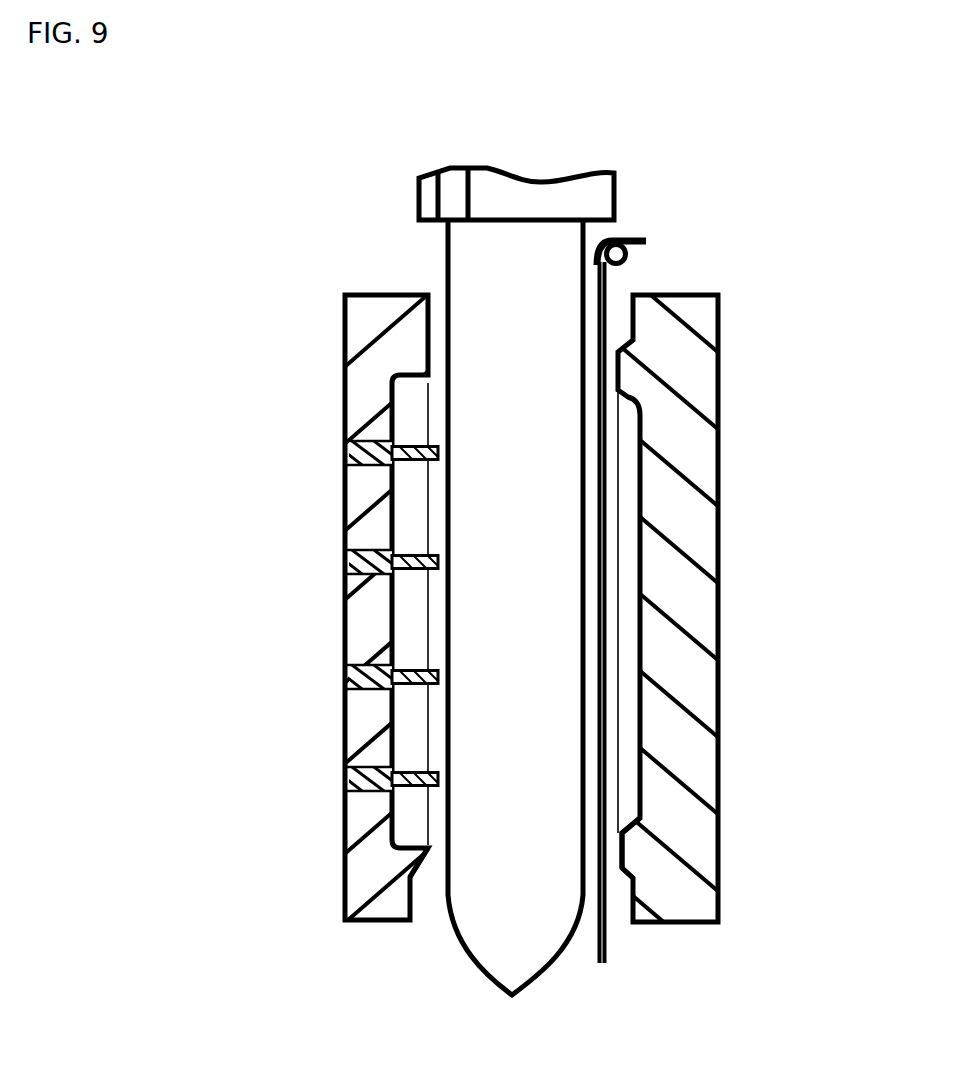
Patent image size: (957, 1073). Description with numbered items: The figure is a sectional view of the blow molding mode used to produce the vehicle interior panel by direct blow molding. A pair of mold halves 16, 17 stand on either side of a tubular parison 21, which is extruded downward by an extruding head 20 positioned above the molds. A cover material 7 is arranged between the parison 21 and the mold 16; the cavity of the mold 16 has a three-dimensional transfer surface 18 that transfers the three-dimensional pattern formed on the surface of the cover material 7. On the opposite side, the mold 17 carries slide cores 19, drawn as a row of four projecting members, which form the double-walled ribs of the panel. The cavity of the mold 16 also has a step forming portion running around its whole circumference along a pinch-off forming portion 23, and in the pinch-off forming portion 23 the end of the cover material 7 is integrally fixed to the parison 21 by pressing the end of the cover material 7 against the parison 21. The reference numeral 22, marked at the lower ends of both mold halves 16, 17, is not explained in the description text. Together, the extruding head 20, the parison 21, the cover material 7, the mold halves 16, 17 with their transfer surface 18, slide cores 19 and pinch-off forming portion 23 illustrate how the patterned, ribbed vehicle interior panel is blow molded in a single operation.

The cover material 7 is at (608, 283).
The mold half 16 is at (703, 465).
The mold half 17 is at (345, 405).
The three-dimensional transfer surface 18 is at (641, 522).
The slide cores 19 is at (433, 445).
The extruding head 20 is at (620, 190).
The parison 21 is at (445, 247).
The chamfered step 22 is at (428, 850).
The pinch-off forming portion 23 is at (625, 832).